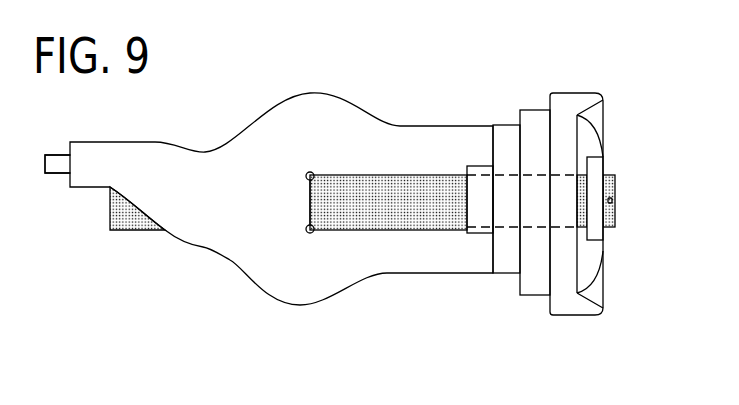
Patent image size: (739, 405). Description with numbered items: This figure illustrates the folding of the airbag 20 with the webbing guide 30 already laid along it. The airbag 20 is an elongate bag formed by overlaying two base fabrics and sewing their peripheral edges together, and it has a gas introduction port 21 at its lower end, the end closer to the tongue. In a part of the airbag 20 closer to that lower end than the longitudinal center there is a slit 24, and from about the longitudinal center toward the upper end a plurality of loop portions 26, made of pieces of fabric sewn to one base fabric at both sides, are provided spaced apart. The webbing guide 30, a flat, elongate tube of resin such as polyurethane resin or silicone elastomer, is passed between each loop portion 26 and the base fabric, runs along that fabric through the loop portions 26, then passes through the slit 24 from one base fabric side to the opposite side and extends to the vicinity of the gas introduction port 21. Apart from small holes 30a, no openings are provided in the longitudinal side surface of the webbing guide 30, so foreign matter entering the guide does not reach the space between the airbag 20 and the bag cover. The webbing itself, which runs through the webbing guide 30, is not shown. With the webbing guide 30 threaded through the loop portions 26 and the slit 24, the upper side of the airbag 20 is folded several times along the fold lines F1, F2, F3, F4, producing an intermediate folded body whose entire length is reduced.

The airbag 20 is at (448, 142).
The gas introduction port 21 is at (55, 165).
The slit 24 is at (313, 205).
The loop portion 26 is at (481, 213).
The webbing guide 30 is at (127, 225).
The small hole 30a is at (618, 195).
The fold line F1 is at (490, 255).
The fold line F2 is at (518, 258).
The fold line F3 is at (547, 278).
The fold line F4 is at (573, 272).